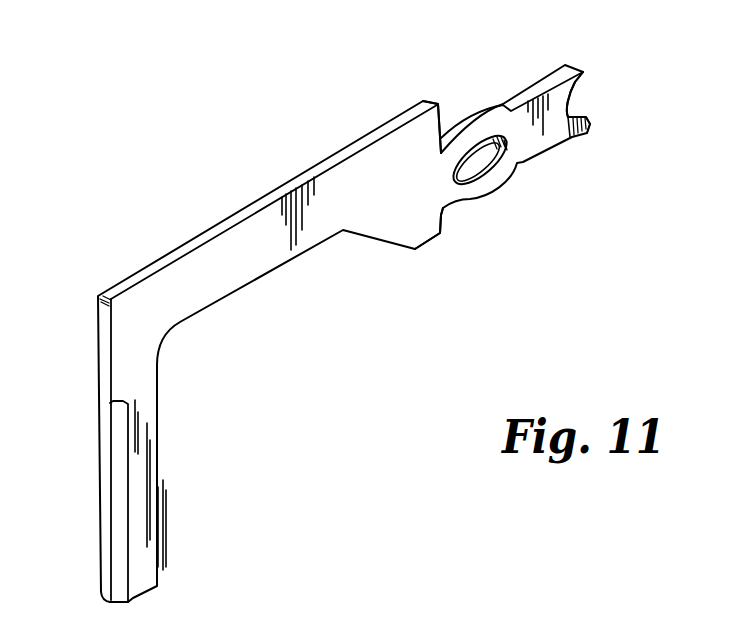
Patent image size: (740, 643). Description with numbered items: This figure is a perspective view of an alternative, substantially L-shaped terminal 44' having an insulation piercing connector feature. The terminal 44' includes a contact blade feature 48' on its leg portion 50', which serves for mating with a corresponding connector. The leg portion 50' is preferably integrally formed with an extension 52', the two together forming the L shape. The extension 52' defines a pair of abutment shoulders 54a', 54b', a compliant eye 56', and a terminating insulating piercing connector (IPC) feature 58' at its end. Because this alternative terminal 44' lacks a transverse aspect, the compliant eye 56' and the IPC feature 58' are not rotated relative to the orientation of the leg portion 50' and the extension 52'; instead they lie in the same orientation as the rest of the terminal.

The terminal 44' is at (357, 317).
The contact blade feature 48' is at (85, 501).
The leg portion 50' is at (181, 482).
The extension 52' is at (281, 249).
The abutment shoulder 54a' is at (419, 102).
The abutment shoulder 54b' is at (465, 235).
The compliant eye 56' is at (485, 112).
The insulating piercing connector (IPC) feature 58' is at (600, 104).